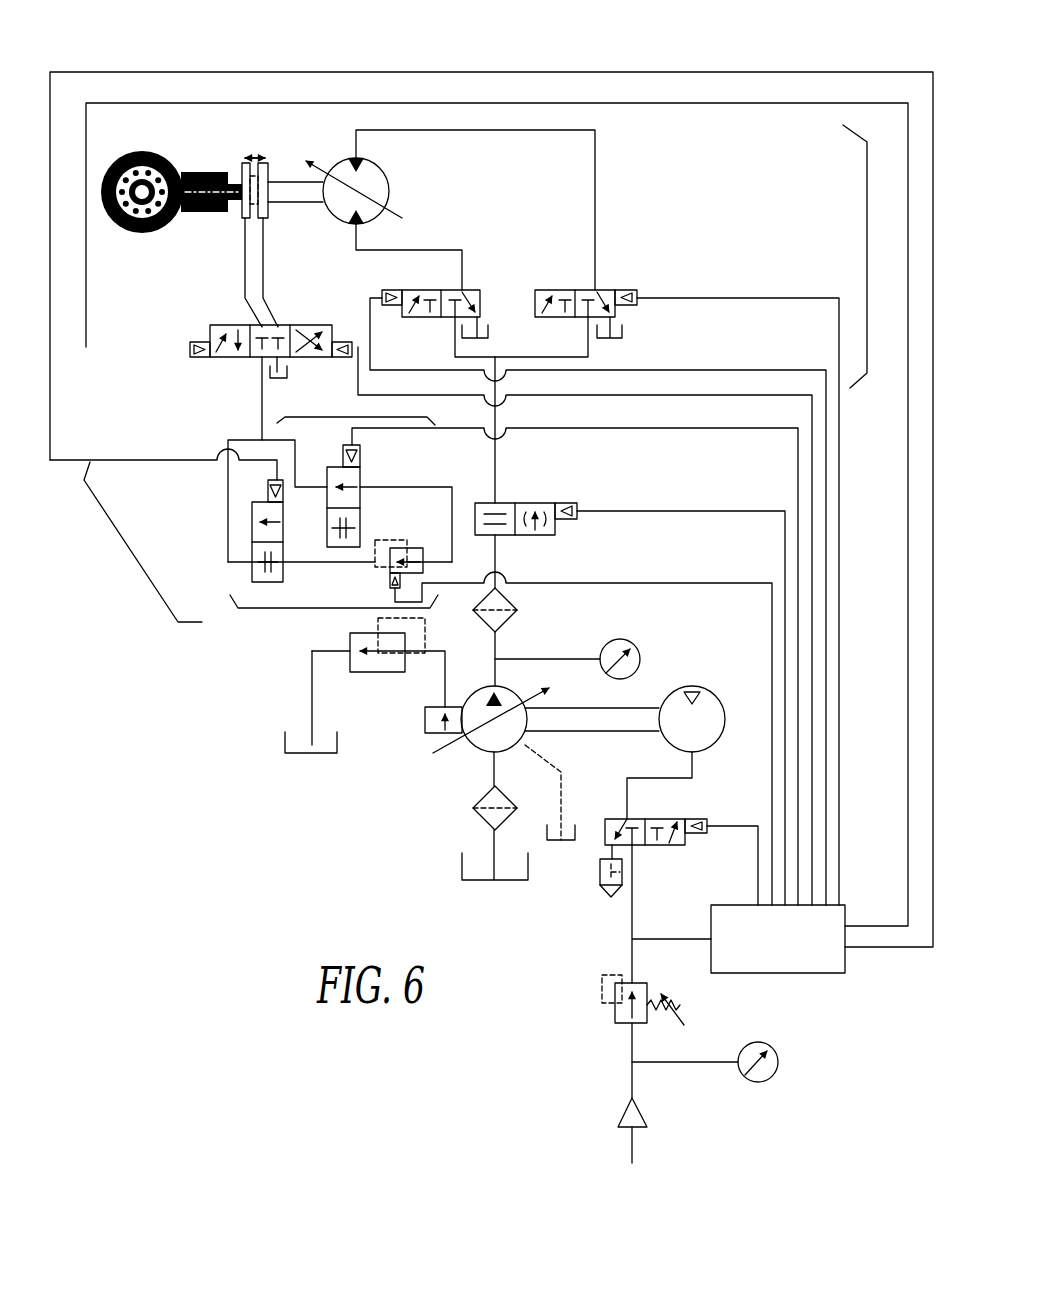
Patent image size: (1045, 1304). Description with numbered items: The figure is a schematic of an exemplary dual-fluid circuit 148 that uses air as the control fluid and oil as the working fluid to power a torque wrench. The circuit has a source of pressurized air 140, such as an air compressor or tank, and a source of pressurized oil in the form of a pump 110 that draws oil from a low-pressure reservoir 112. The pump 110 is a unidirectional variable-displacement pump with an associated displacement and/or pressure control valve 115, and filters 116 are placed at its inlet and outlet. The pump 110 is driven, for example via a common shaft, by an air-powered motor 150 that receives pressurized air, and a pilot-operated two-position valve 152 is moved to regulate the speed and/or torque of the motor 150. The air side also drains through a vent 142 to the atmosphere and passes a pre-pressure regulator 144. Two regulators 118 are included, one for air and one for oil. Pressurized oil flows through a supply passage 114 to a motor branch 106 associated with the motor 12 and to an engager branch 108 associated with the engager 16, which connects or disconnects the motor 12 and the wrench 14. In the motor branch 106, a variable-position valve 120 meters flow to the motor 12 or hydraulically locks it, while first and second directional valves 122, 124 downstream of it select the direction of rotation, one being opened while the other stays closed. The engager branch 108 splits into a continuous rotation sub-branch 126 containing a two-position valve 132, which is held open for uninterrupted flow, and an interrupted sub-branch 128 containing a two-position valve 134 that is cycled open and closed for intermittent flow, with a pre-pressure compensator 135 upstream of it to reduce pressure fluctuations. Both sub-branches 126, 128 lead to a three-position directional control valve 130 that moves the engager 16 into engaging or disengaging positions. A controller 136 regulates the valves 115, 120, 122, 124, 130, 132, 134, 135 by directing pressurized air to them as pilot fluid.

The motor 12 is at (358, 196).
The wrench 14 is at (210, 158).
The engager 16 is at (282, 242).
The motor branch 106 is at (867, 252).
The engager branch 108 is at (130, 548).
The pump 110 is at (482, 743).
The reservoir 112 is at (488, 332).
The supply passage 114 is at (497, 648).
The displacement and/or pressure control valve 115 is at (355, 675).
The filter 116 is at (517, 606).
The pressure regulator 118 is at (640, 655).
The variable-position valve 120 is at (545, 535).
The first directional valve 122 is at (468, 290).
The second directional valve 124 is at (600, 290).
The continuous rotation sub-branch 126 is at (325, 416).
The interrupted sub-branch 128 is at (290, 610).
The directional control valve 130 is at (305, 323).
The two-position valve 132 is at (362, 468).
The two-position valve 134 is at (283, 568).
The pre-pressure compensator 135 is at (423, 568).
The controller 136 is at (764, 950).
The source of pressurized air 140 is at (647, 1115).
The vent 142 is at (606, 897).
The pre-pressure regulator 144 is at (622, 1025).
The dual-fluid circuit 148 is at (150, 757).
The air-powered motor 150 is at (680, 728).
The pilot-operated two-position valve 152 is at (665, 845).